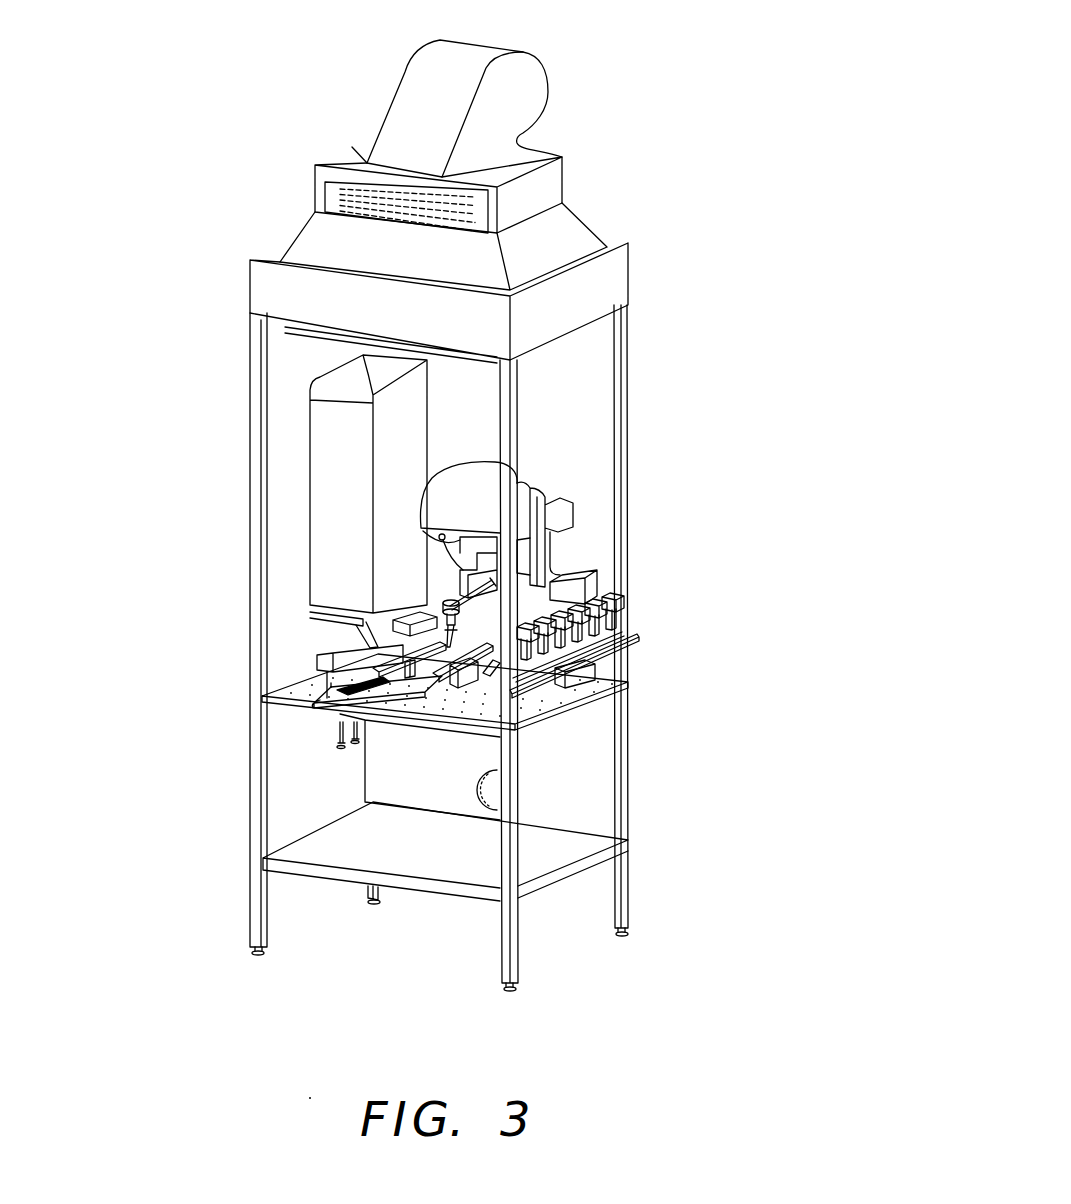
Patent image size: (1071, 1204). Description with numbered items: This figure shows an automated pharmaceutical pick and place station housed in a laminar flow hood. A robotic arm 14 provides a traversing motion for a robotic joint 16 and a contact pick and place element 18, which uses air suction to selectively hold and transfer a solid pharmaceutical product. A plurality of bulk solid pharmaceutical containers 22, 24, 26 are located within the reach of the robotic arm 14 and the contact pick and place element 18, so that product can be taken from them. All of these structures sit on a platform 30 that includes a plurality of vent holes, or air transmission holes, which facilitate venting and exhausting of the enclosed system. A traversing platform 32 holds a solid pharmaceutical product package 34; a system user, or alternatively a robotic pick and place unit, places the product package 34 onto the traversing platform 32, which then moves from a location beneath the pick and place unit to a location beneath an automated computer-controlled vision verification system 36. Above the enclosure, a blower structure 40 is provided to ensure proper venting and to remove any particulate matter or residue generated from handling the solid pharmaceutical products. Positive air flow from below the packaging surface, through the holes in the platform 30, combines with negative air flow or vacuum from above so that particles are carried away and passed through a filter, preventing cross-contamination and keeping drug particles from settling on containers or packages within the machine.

The robotic arm 14 is at (512, 610).
The robotic joint 16 is at (430, 607).
The contact pick and place element 18 is at (410, 670).
The bulk solid pharmaceutical container 22 is at (580, 660).
The bulk solid pharmaceutical container 24 is at (583, 623).
The bulk solid pharmaceutical container 26 is at (600, 603).
The platform 30 is at (535, 712).
The traversing platform 32 is at (460, 677).
The solid pharmaceutical product package 34 is at (327, 690).
The automated computer-controlled vision verification system 36 is at (323, 437).
The blower structure 40 is at (548, 233).